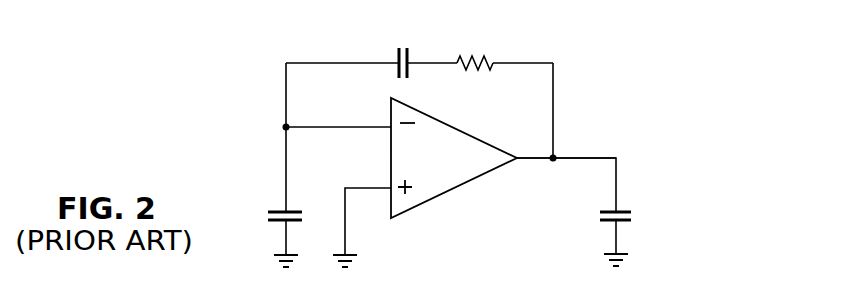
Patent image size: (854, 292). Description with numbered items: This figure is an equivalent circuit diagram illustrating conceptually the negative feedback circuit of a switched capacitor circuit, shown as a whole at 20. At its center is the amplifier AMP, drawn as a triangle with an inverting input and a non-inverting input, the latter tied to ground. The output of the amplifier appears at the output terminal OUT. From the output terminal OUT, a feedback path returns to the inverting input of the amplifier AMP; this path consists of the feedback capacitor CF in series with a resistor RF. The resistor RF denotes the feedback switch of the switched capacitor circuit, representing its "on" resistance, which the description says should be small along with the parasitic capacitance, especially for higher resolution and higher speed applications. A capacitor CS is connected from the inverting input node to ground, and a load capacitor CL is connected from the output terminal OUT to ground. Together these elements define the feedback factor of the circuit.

The prior art amplifier circuit 20 is at (662, 39).
The feedback capacitor CF is at (386, 55).
The resistor RF is at (486, 51).
The source capacitor CS is at (294, 225).
The amplifier AMP is at (454, 158).
The output terminal OUT is at (566, 140).
The load capacitor CL is at (627, 225).